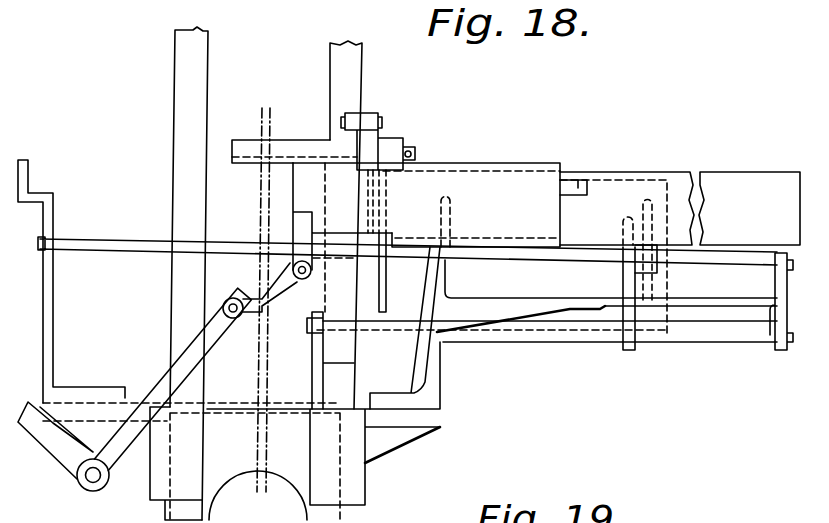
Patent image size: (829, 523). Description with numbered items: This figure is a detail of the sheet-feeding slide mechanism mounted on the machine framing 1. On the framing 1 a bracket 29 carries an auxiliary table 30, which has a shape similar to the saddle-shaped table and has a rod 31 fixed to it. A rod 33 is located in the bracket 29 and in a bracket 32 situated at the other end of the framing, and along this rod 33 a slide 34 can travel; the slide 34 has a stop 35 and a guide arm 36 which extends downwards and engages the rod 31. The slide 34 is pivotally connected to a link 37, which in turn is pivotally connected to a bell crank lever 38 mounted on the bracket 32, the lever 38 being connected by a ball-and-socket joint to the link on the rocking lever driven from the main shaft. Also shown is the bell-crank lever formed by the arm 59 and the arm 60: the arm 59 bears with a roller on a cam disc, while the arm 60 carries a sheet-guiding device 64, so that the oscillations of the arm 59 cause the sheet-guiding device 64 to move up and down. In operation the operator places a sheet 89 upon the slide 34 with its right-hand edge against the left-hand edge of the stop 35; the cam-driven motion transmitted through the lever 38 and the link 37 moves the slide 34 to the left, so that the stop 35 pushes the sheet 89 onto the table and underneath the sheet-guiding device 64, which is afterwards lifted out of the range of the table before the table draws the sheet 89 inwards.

The machine framing 1 is at (273, 494).
The bracket 29 is at (312, 373).
The auxiliary table 30 is at (635, 192).
The rod 31 is at (742, 339).
The bracket 32 is at (43, 200).
The rod 33 is at (138, 243).
The slide 34 is at (597, 170).
The stop 35 is at (580, 195).
The guide arm 36 is at (627, 350).
The link 37 is at (285, 276).
The bell crank lever 38 is at (213, 342).
The arm 59 is at (387, 280).
The arm 60 is at (378, 115).
The sheet-guiding device 64 is at (293, 147).
The sheet 89 is at (513, 163).